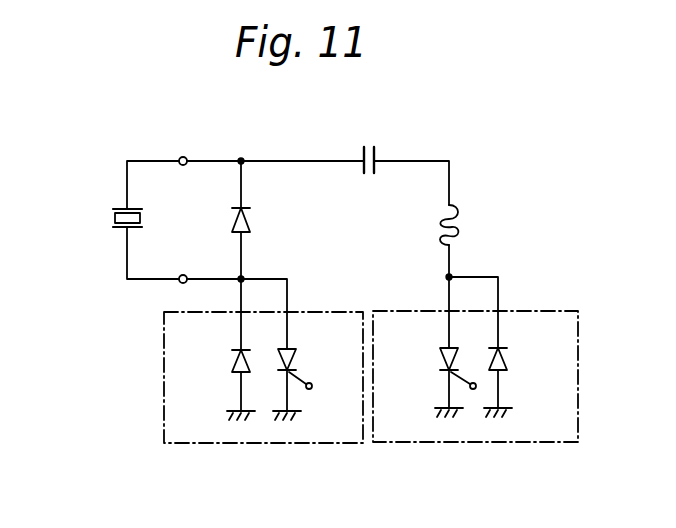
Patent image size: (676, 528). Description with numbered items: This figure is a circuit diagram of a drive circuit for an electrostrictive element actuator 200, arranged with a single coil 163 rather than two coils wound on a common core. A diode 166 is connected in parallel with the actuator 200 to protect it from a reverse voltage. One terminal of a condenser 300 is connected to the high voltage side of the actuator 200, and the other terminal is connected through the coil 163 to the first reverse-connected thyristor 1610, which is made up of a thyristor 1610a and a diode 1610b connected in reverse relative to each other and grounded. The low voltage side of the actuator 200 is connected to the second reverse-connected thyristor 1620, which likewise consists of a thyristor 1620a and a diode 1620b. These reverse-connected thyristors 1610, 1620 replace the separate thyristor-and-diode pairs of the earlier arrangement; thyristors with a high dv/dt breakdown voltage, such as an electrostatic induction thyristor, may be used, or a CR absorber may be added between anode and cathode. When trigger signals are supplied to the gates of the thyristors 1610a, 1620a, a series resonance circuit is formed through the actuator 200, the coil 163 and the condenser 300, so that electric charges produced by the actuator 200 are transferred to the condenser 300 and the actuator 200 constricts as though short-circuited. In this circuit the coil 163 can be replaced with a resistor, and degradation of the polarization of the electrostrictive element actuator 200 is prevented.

The actuator 200 is at (112, 218).
The diode 166 is at (232, 218).
The condenser 300 is at (367, 146).
The coil 163 is at (460, 222).
The reverse-connected thyristor 1620 is at (272, 443).
The thyristor 1620a is at (323, 353).
The diode 1620b is at (228, 362).
The reverse-connected thyristor 1610 is at (483, 442).
The thyristor 1610a is at (433, 358).
The diode 1610b is at (535, 349).